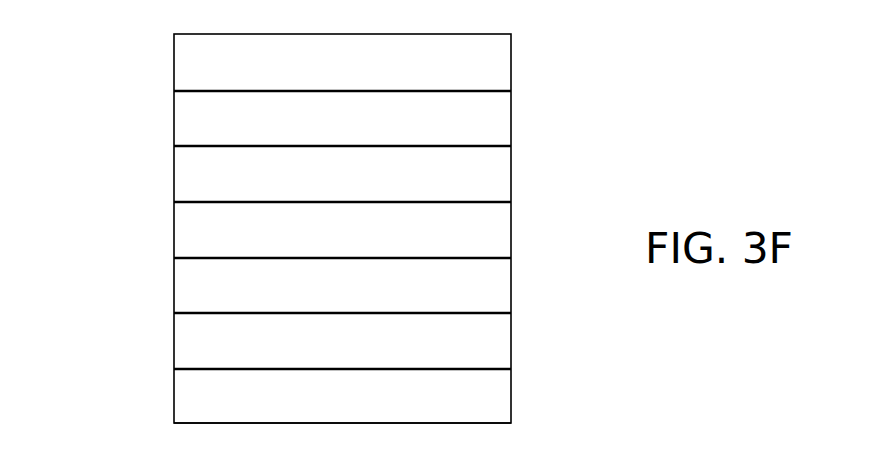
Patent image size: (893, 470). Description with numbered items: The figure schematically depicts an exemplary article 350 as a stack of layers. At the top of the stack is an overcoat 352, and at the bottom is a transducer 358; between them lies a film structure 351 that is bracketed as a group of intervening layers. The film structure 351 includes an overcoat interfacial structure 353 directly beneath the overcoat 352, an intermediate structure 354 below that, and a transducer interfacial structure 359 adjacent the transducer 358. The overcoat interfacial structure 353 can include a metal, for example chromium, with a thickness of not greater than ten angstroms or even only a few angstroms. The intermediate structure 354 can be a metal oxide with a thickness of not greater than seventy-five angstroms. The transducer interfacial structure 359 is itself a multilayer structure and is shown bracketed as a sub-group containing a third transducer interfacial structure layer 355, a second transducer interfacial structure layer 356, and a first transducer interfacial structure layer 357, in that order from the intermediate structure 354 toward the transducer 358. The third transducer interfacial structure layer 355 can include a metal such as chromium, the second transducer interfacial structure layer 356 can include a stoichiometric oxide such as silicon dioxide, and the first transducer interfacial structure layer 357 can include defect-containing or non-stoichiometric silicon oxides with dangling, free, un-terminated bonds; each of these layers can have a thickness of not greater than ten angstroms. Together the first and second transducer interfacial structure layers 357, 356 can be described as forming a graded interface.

The article 350 is at (513, 34).
The film structure 351 is at (117, 88).
The overcoat 352 is at (342, 73).
The overcoat interfacial structure 353 is at (342, 128).
The intermediate structure 354 is at (342, 183).
The third transducer interfacial structure layer 355 is at (342, 239).
The second transducer interfacial structure layer 356 is at (342, 295).
The first transducer interfacial structure layer 357 is at (342, 350).
The transducer 358 is at (342, 405).
The transducer interfacial structure 359 is at (173, 202).